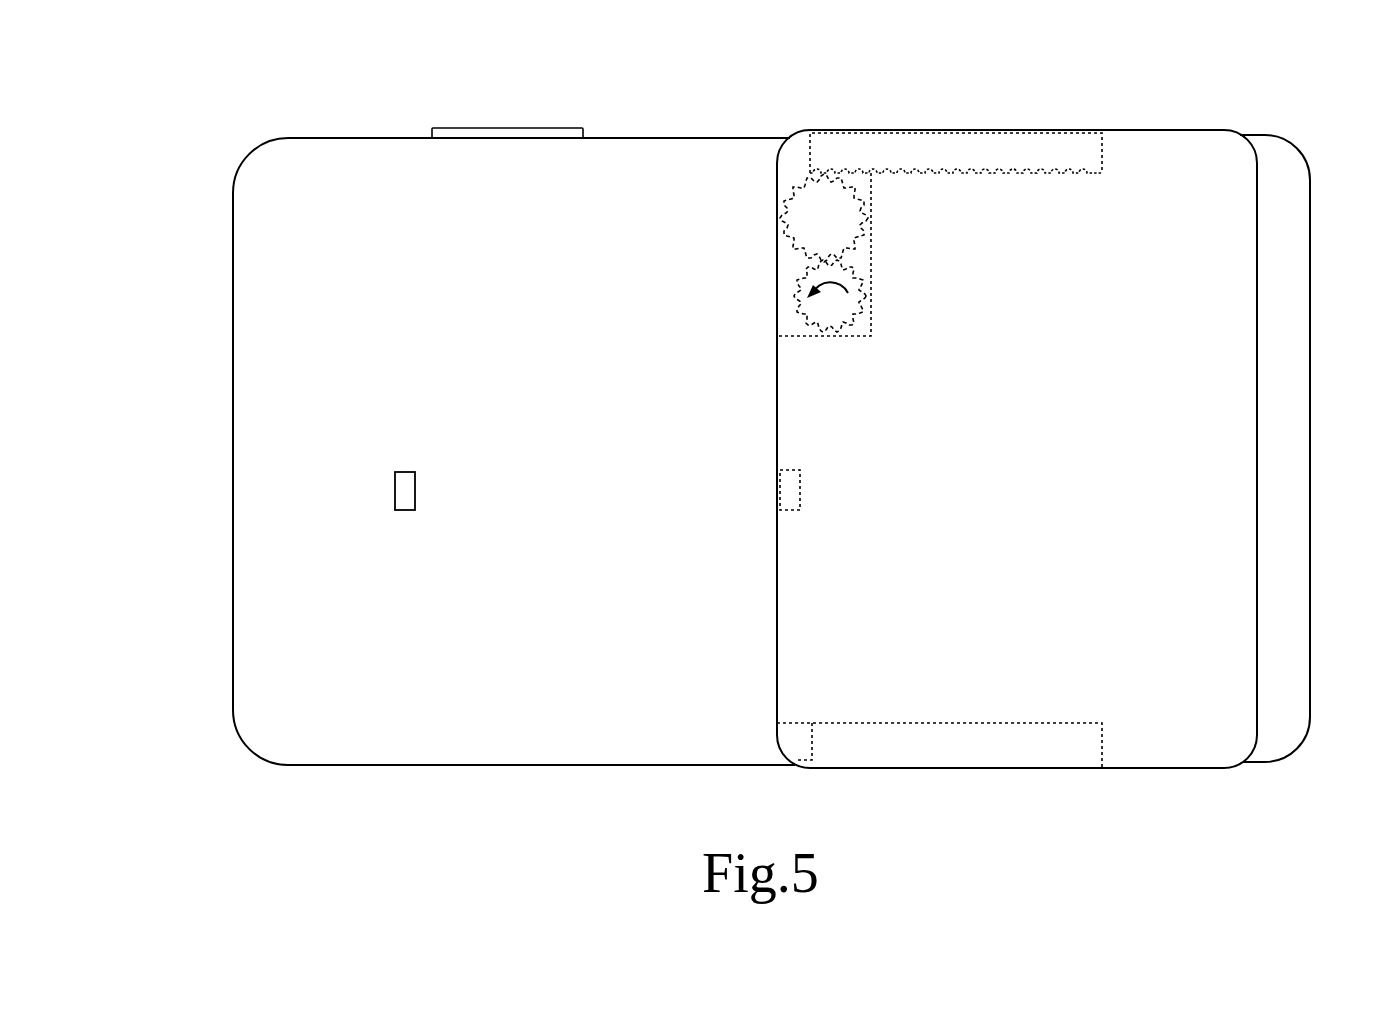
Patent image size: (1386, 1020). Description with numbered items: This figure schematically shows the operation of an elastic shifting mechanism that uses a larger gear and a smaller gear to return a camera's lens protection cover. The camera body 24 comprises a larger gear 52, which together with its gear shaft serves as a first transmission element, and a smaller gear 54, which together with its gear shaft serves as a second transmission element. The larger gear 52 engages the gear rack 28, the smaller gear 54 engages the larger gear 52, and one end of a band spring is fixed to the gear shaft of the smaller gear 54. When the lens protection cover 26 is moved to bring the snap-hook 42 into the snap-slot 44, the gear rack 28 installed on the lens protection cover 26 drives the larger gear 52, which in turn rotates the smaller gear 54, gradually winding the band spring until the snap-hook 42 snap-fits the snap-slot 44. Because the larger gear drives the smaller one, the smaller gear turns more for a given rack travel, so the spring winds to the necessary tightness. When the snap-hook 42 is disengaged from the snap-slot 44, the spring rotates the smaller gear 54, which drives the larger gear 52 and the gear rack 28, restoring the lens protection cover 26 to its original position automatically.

The camera body 24 is at (233, 533).
The lens protection cover 26 is at (1230, 433).
The gear rack 28 is at (1038, 167).
The snap-hook 42 is at (405, 492).
The snap-slot 44 is at (790, 490).
The larger gear 52 is at (807, 217).
The smaller gear 54 is at (818, 302).